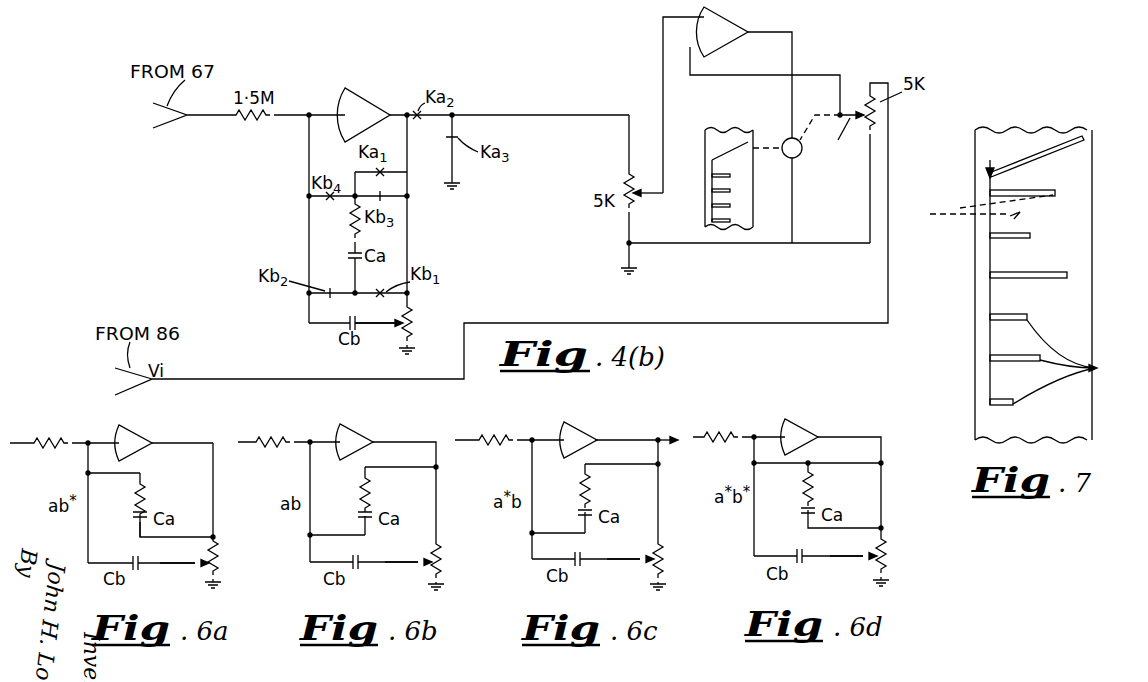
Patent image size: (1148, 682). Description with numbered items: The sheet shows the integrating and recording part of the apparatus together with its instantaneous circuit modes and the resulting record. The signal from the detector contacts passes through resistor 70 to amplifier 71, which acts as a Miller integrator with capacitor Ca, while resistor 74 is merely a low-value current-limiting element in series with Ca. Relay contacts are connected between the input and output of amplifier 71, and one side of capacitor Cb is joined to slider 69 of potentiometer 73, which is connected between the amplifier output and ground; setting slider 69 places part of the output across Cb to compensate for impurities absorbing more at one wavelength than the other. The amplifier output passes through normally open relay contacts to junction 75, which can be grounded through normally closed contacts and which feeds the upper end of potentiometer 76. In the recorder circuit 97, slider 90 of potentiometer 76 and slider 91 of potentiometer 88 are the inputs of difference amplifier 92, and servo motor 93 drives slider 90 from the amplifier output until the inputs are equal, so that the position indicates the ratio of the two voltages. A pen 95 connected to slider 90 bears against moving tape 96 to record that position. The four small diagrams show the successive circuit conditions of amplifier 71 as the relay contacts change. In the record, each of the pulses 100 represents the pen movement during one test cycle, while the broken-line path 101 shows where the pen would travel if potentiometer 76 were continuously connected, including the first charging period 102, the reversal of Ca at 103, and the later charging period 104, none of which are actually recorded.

In FIG. 4B, the resistor 70 is at (254, 118).
In FIG. 6A, the resistor 70 is at (46, 438).
In FIG. 6B, the resistor 70 is at (270, 438).
In FIG. 6C, the resistor 70 is at (493, 436).
In FIG. 6D, the resistor 70 is at (718, 433).
In FIG. 4B, the amplifier 71 is at (361, 94).
In FIG. 6A, the amplifier 71 is at (138, 434).
In FIG. 6B, the amplifier 71 is at (360, 434).
In FIG. 6C, the amplifier 71 is at (583, 432).
In FIG. 6D, the amplifier 71 is at (804, 429).
In FIG. 4B, the potentiometer 73 is at (411, 325).
In FIG. 6A, the potentiometer 73 is at (223, 562).
In FIG. 6B, the potentiometer 73 is at (445, 560).
In FIG. 6C, the potentiometer 73 is at (667, 560).
In FIG. 6D, the potentiometer 73 is at (890, 555).
In FIG. 4B, the resistor 74 is at (349, 211).
In FIG. 6A, the resistor 74 is at (147, 495).
In FIG. 6B, the resistor 74 is at (372, 495).
In FIG. 6C, the resistor 74 is at (592, 493).
In FIG. 6D, the resistor 74 is at (815, 491).
In FIG. 4B, the junction 75 is at (451, 117).
In FIG. 6C, the junction 75 is at (651, 434).
In FIG. 4B, the potentiometer 76 is at (626, 180).
In FIG. 4B, the potentiometer 88 is at (876, 107).
In FIG. 4B, the slider 90 is at (647, 196).
In FIG. 4B, the slider 91 is at (838, 146).
In FIG. 4B, the difference amplifier 92 is at (722, 38).
In FIG. 4B, the servo motor 93 is at (786, 160).
In FIG. 4B, the pen 95 is at (712, 158).
In FIG. 7, the pen 95 is at (1052, 140).
In FIG. 4B, the moving tape 96 is at (740, 138).
In FIG. 7, the moving tape 96 is at (1088, 152).
In FIG. 4B, the recorder circuit 97 is at (718, 125).
In FIG. 7, the pulses 100 is at (1074, 362).
In FIG. 7, the broken-line path 101 is at (1106, 255).
In FIG. 7, the charging period excursion 102 is at (1018, 219).
In FIG. 7, the Ca reversal excursion 103 is at (997, 215).
In FIG. 7, the charging period excursion 104 is at (982, 205).
In FIG. 4B, the slider 69 is at (391, 324).
In FIG. 6A, the slider 69 is at (190, 564).
In FIG. 6B, the slider 69 is at (413, 564).
In FIG. 6C, the slider 69 is at (635, 562).
In FIG. 6D, the slider 69 is at (858, 559).